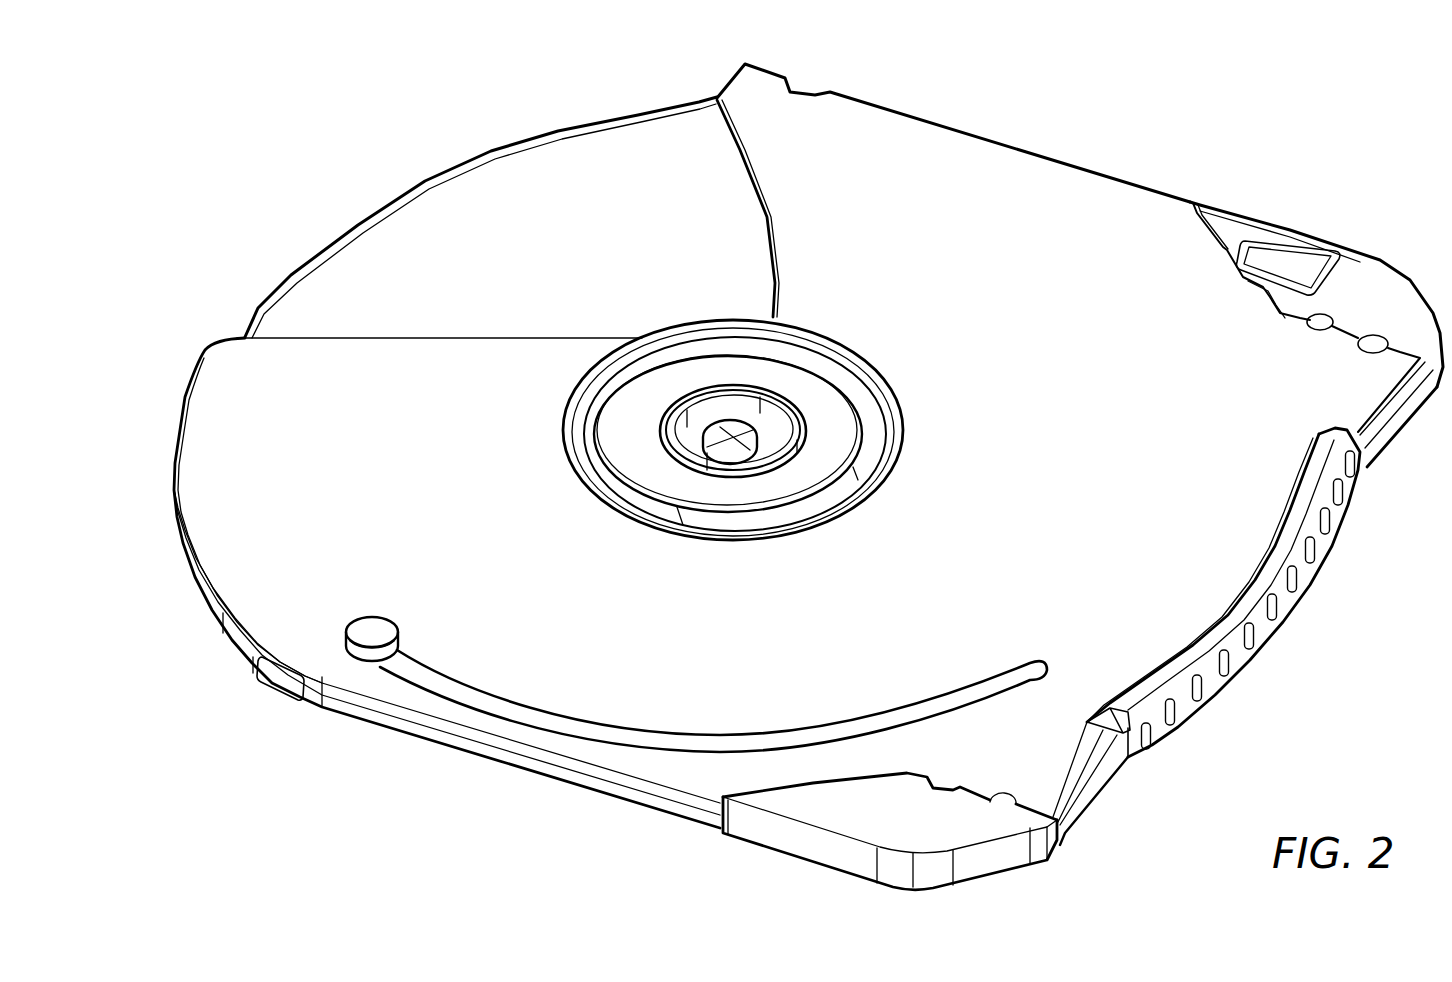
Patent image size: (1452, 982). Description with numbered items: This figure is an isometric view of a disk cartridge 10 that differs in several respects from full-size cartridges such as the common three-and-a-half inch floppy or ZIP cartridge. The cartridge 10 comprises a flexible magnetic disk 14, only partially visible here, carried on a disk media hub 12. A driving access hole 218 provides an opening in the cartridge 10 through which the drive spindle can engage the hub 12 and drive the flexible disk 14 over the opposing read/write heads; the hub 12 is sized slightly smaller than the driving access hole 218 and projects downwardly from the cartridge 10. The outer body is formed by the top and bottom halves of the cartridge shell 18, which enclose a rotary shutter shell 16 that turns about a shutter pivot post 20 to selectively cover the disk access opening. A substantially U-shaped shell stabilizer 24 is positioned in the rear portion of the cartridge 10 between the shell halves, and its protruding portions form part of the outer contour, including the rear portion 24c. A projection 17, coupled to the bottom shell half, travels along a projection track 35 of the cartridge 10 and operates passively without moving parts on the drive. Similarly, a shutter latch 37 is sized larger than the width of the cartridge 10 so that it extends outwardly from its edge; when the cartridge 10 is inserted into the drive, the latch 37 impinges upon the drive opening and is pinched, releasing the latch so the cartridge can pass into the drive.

The disk cartridge 10 is at (152, 786).
The disk media hub 12 is at (840, 432).
The flexible magnetic disk 14 is at (626, 377).
The rotary shutter shell 16 is at (590, 226).
The projection 17 is at (374, 633).
The cartridge shell 18 is at (1172, 217).
The shutter pivot post 20 is at (725, 427).
The shell stabilizer 24 is at (1393, 298).
The rear portion 24c is at (1307, 531).
The projection track 35 is at (732, 742).
The shutter latch 37 is at (293, 685).
The driving access hole 218 is at (845, 335).